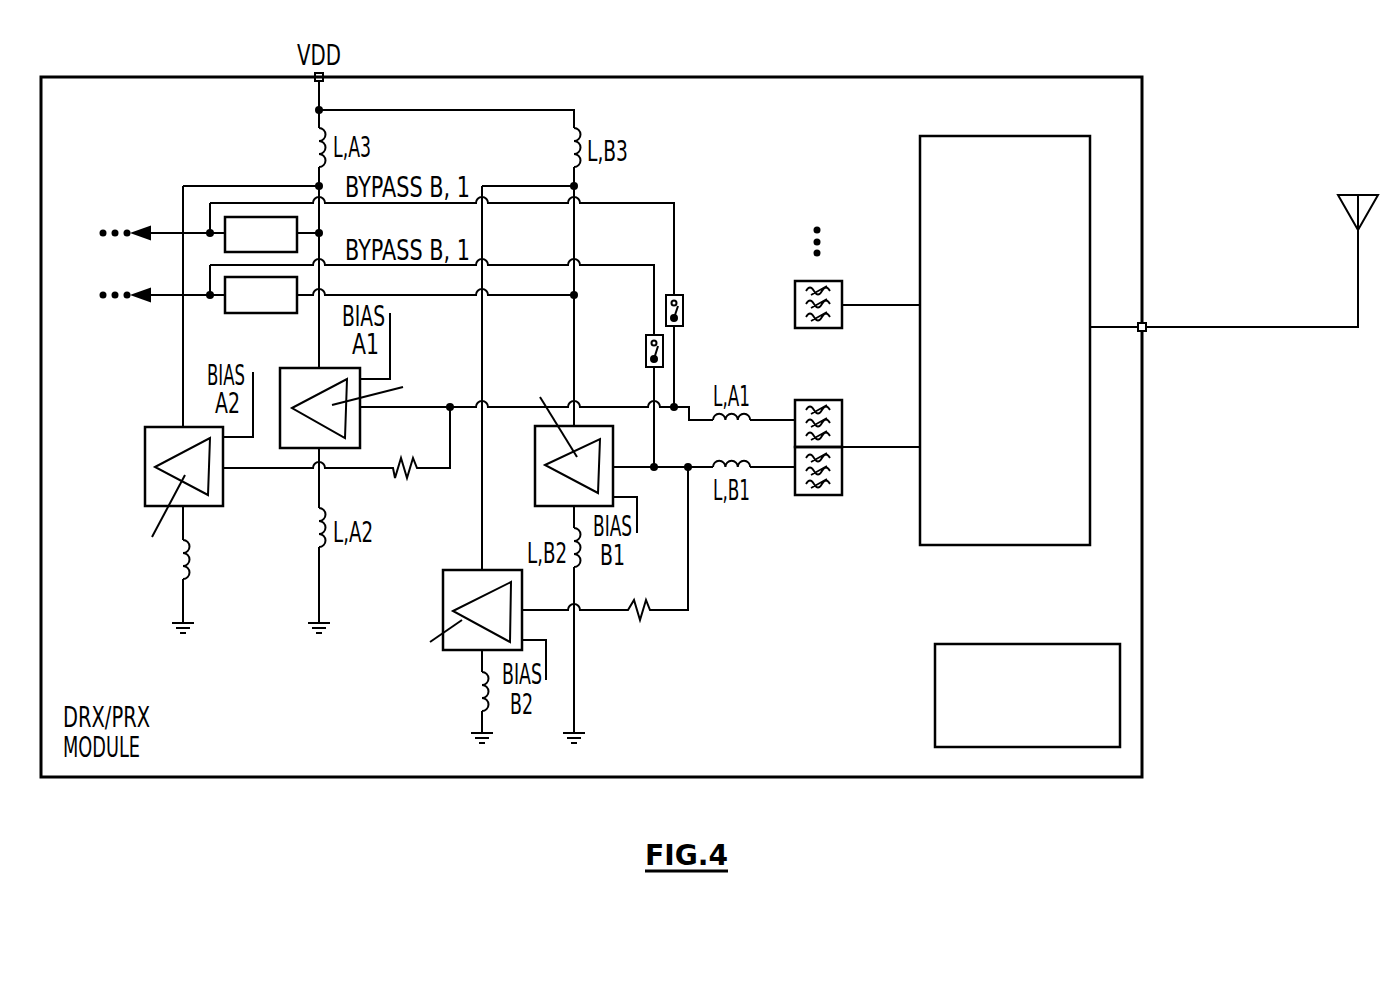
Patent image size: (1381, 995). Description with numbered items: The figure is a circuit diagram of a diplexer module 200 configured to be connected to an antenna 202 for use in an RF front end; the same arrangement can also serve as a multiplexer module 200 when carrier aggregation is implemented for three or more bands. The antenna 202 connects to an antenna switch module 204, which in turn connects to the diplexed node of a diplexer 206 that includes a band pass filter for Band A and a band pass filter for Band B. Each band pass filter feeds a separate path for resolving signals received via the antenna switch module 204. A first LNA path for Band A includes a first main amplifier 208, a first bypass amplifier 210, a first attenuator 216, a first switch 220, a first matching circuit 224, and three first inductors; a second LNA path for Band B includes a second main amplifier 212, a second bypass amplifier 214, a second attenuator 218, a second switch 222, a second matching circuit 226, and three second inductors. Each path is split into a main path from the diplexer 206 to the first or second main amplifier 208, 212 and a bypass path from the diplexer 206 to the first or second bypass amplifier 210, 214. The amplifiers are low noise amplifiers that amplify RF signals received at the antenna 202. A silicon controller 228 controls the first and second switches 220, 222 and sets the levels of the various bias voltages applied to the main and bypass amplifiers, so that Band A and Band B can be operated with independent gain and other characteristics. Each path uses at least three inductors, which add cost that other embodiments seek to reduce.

The diplexer module 200 is at (810, 77).
The antenna 202 is at (1345, 195).
The antenna switch module (ASM) 204 is at (1027, 377).
The diplexer 206 is at (842, 410).
The first main amplifier 208 is at (360, 437).
The first bypass amplifier 210 is at (158, 427).
The second main amplifier 212 is at (555, 506).
The second bypass amplifier 214 is at (465, 570).
The first attenuator 216 is at (410, 480).
The second attenuator 218 is at (648, 620).
The first switch 220 is at (678, 293).
The second switch 222 is at (651, 335).
The first matching circuit 224 is at (250, 217).
The second matching circuit 226 is at (250, 313).
The silicon (Si) controller 228 is at (1050, 740).